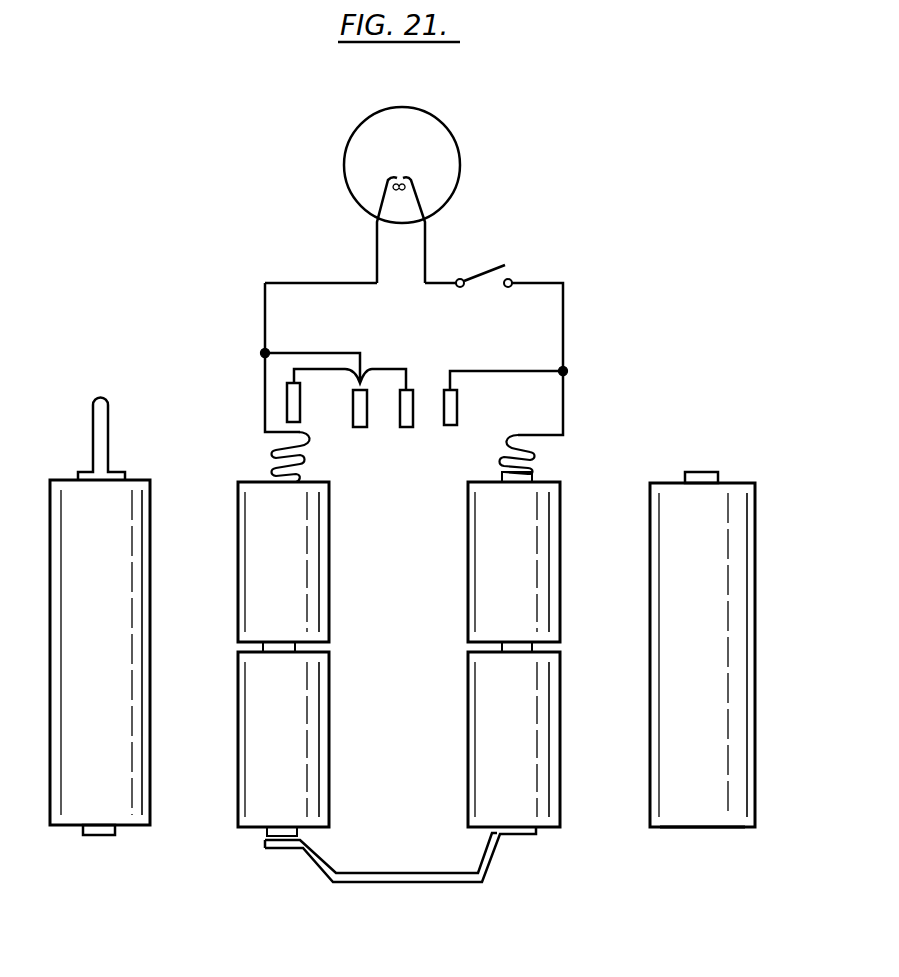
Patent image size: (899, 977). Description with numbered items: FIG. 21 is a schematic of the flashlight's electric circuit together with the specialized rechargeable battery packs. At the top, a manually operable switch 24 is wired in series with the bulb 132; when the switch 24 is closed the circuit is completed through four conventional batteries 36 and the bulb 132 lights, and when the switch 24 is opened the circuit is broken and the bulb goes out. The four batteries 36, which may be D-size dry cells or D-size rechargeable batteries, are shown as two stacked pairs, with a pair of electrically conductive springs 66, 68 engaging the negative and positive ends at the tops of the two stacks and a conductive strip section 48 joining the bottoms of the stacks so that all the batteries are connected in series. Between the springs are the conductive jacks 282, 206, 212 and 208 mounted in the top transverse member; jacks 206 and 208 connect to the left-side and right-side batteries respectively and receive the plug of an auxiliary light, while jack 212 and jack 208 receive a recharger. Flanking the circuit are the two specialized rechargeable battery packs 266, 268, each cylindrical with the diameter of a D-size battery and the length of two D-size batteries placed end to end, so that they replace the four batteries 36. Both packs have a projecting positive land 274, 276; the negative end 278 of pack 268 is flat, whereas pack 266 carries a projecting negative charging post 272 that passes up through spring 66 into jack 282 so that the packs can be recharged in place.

The bulb 132 is at (483, 130).
The manually operable switch 24 is at (483, 268).
The conductive jack 282 is at (287, 393).
The first electrically conductive jack 206 is at (353, 415).
The third jack 212 is at (413, 415).
The second electrically conductive jack 208 is at (457, 403).
The electrically conductive spring 66 is at (283, 447).
The electrically conductive spring 68 is at (530, 447).
The specialized rechargeable battery pack 266 is at (130, 662).
The charging post 272 is at (105, 408).
The projecting land 274 is at (95, 838).
The conventional batteries 36 is at (473, 622).
The conductive strip section 48 is at (390, 883).
The specialized rechargeable battery pack 268 is at (740, 662).
The projecting land 276 is at (698, 470).
The negative end 278 is at (695, 830).